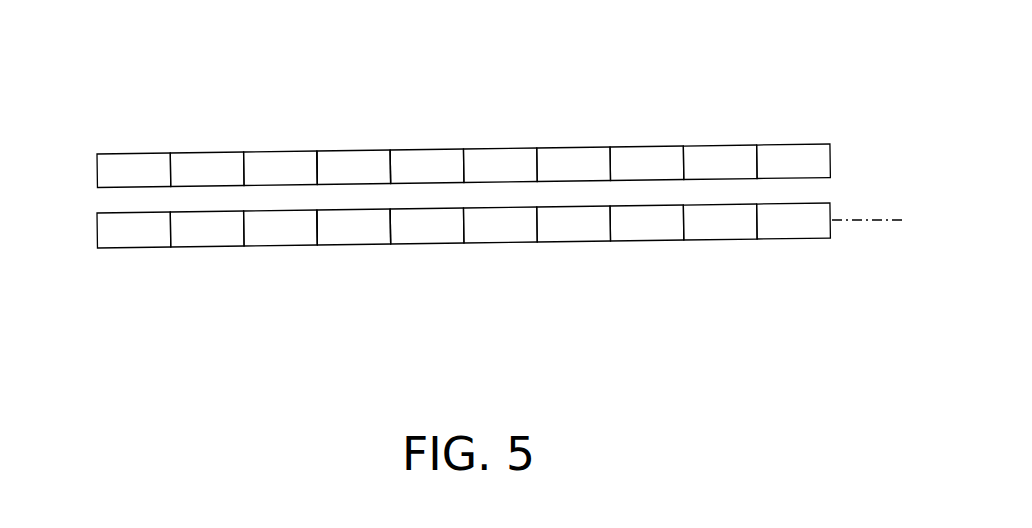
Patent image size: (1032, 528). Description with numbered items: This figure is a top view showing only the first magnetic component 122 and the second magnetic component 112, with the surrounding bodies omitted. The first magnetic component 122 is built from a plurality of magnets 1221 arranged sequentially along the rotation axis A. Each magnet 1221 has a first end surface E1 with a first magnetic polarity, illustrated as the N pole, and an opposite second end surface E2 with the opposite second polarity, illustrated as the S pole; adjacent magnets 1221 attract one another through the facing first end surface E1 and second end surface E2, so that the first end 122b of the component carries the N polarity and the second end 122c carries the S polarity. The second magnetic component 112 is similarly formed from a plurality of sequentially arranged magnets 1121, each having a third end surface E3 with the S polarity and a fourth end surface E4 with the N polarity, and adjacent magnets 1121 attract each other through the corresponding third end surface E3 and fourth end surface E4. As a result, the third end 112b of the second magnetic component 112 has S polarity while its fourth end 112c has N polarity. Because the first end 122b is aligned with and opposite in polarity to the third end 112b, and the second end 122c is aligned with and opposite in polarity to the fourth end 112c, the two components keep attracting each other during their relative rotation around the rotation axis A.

The second magnetic component 112 is at (487, 107).
The third end 112b is at (88, 162).
The fourth end 112c is at (843, 152).
The magnet 1121 is at (352, 126).
The third end surface E3 is at (314, 152).
The fourth end surface E4 is at (393, 150).
The first magnetic component 122 is at (496, 286).
The first end 122b is at (90, 232).
The second end 122c is at (839, 233).
The magnet 1221 is at (355, 271).
The first end surface E1 is at (315, 246).
The second end surface E2 is at (393, 246).
The rotation axis A is at (907, 220).